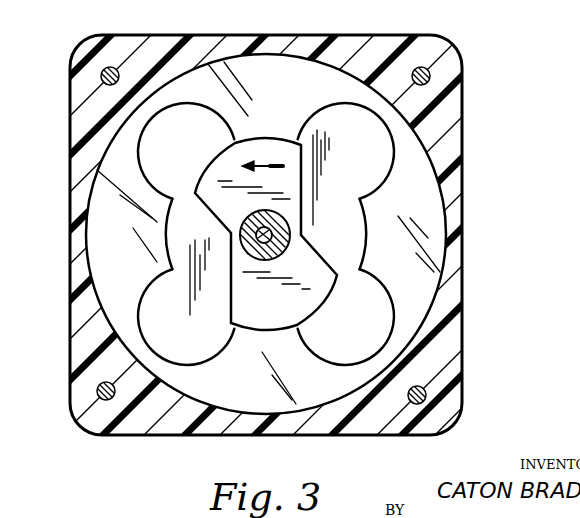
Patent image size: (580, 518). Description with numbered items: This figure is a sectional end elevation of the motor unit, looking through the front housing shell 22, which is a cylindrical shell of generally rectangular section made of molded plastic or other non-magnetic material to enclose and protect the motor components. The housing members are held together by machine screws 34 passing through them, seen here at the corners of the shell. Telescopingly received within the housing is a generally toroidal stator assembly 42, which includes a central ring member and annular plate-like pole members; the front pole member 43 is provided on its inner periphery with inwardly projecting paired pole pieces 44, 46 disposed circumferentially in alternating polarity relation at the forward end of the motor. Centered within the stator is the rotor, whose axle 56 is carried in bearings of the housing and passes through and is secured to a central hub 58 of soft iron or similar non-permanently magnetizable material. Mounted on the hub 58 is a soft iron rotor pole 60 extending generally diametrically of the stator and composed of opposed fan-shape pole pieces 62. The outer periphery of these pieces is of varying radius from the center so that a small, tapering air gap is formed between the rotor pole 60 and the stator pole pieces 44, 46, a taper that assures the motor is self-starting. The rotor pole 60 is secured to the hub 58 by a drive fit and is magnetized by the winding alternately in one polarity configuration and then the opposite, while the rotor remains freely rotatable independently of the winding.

The front housing shell 22 is at (274, 45).
The machine screws 34 is at (117, 67).
The stator assembly 42 is at (449, 192).
The pole member 43 is at (190, 83).
The stator pole piece 44 is at (249, 135).
The stator pole piece 46 is at (162, 229).
The axle 56 is at (274, 238).
The central hub 58 is at (279, 219).
The rotor pole piece 60 is at (217, 228).
The fan-shape pole piece 62 is at (226, 166).